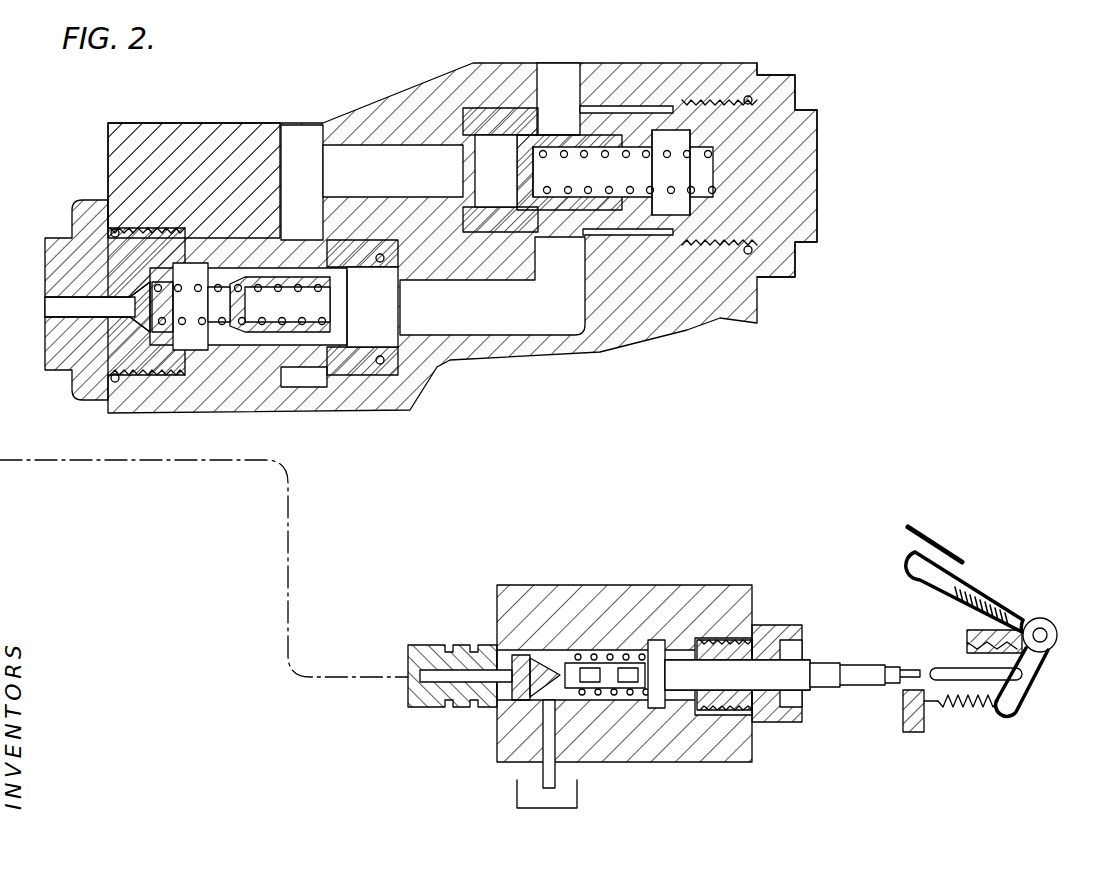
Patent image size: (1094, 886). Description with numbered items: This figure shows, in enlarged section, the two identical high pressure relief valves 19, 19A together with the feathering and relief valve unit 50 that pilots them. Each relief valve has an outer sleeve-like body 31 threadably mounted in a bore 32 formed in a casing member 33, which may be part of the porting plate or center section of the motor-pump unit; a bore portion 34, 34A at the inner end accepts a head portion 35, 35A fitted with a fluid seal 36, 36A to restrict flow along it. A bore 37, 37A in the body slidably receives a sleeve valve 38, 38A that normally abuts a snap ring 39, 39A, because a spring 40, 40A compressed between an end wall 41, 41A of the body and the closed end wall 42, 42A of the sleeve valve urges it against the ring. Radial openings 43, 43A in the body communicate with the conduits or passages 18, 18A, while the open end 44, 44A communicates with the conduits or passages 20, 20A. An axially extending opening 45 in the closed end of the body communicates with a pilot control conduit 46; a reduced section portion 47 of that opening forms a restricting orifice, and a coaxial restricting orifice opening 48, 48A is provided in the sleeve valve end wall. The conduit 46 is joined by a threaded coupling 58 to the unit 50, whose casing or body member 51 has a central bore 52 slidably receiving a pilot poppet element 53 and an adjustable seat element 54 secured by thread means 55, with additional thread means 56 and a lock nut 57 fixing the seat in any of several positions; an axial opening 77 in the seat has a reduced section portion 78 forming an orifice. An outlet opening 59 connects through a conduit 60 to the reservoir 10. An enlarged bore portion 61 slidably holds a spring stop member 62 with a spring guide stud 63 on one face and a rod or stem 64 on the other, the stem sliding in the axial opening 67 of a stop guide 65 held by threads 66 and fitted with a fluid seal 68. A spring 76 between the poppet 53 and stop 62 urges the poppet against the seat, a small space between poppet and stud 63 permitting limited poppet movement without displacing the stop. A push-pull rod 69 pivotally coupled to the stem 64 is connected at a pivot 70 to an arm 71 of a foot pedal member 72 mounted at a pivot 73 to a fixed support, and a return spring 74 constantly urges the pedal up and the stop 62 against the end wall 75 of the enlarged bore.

The reservoir 10 is at (547, 810).
The conduit or passage 18 is at (316, 122).
The conduit or passage 18A is at (570, 68).
The high pressure relief valve 19 is at (48, 385).
The high pressure relief valve 19A is at (808, 265).
The conduit or passage 20 is at (480, 332).
The conduit or passage 20A is at (378, 148).
The outer sleeve-like body 31 is at (85, 215).
The bore 32 is at (235, 222).
The casing member 33 is at (110, 127).
The bore portion 34 is at (340, 200).
The bore portion 34A is at (505, 112).
The head portion 35 is at (400, 250).
The head portion 35A is at (455, 120).
The fluid seal 36 is at (382, 362).
The fluid seal 36A is at (492, 286).
The bore 37 is at (198, 335).
The bore 37A is at (638, 205).
The sleeve valve 38 is at (262, 335).
The sleeve valve 38A is at (607, 205).
The snap ring 39 is at (348, 372).
The snap ring 39A is at (545, 240).
The spring 40 is at (195, 290).
The spring 40A is at (670, 150).
The end wall 41 is at (160, 335).
The end wall 41A is at (800, 193).
The end wall 42 is at (314, 280).
The end wall 42A is at (525, 172).
The radial openings 43 is at (296, 335).
The radial openings 43A is at (560, 108).
The open end 44 is at (398, 320).
The open end 44A is at (468, 213).
The axially extending opening 45 is at (60, 305).
The pilot control conduit 46 is at (165, 463).
The reduced section portion 47 is at (138, 303).
The restricting orifice opening 48 is at (398, 305).
The restricting orifice opening 48A is at (525, 180).
The feathering and relief valve unit 50 is at (614, 583).
The casing or body member 51 is at (704, 592).
The central bore 52 is at (525, 660).
The pilot poppet element 53 is at (600, 692).
The adjustable seat element 54 is at (518, 652).
The thread means 55 is at (530, 692).
The thread means 56 is at (482, 644).
The lock nut 57 is at (452, 643).
The threaded coupling 58 is at (412, 706).
The outlet opening 59 is at (545, 722).
The conduit 60 is at (543, 765).
The enlarged bore portion 61 is at (678, 705).
The spring stop member 62 is at (660, 650).
The spring guide pin or stud 63 is at (632, 692).
The rod or stem 64 is at (762, 662).
The stop guide 65 is at (748, 705).
The threads 66 is at (745, 640).
The axial opening 67 is at (720, 718).
The fluid seal 68 is at (818, 668).
The push-pull rod 69 is at (938, 667).
The pivotal connection 70 is at (1022, 710).
The arm 71 is at (1030, 668).
The foot pedal member 72 is at (992, 590).
The pivotal mounting 73 is at (1045, 620).
The return spring 74 is at (975, 706).
The end wall 75 is at (652, 655).
The spring 76 is at (603, 654).
The axial opening 77 is at (458, 705).
The reduced section portion 78 is at (540, 660).